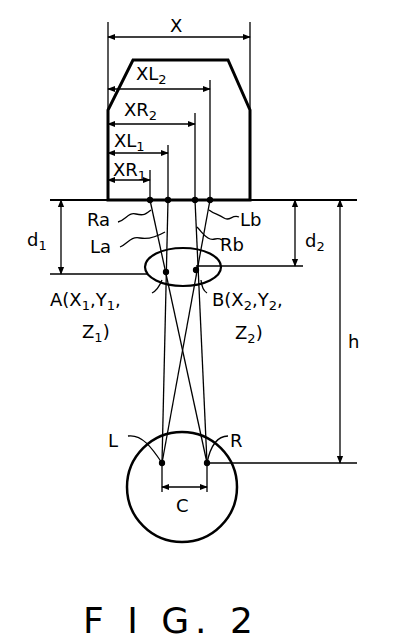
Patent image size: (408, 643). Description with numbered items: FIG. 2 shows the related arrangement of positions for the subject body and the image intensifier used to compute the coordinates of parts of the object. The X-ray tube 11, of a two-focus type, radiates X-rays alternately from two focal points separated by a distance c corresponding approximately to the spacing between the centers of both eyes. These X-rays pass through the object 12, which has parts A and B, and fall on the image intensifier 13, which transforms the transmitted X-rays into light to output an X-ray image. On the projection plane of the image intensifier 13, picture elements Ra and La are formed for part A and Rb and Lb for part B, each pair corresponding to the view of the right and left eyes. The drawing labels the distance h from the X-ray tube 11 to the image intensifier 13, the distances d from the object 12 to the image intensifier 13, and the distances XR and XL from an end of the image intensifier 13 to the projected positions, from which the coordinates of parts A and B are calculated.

The X-ray tube 11 is at (236, 507).
The subject 12 is at (221, 265).
The image intensifier 13 is at (237, 72).